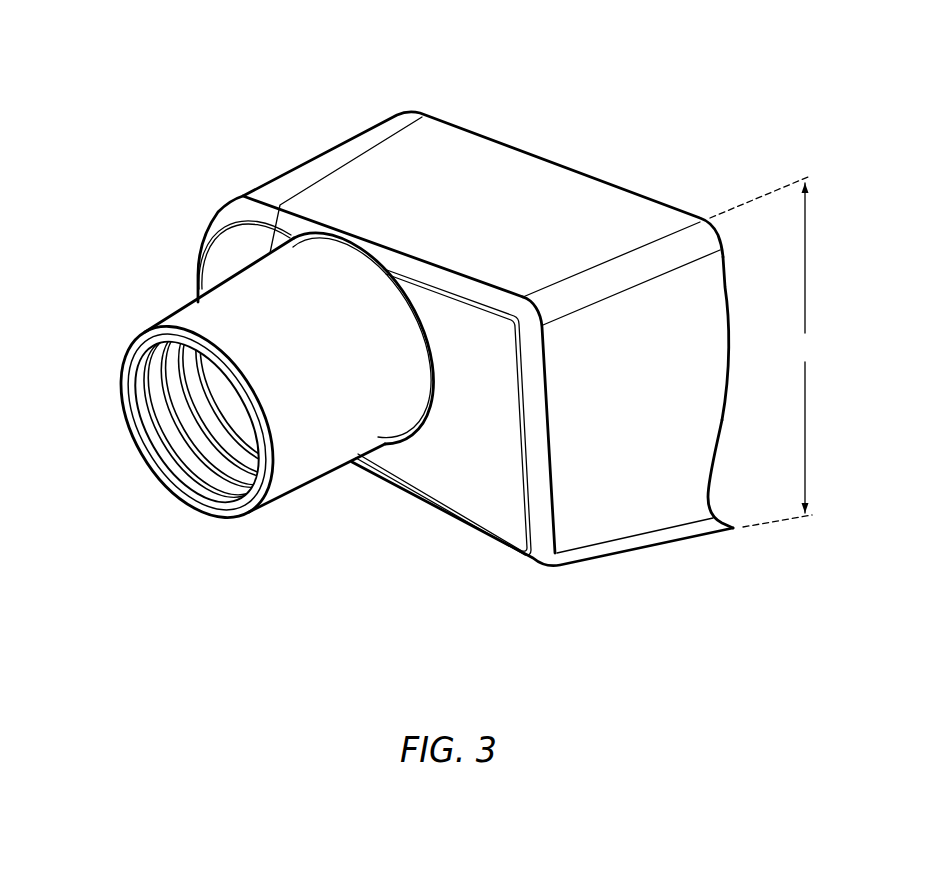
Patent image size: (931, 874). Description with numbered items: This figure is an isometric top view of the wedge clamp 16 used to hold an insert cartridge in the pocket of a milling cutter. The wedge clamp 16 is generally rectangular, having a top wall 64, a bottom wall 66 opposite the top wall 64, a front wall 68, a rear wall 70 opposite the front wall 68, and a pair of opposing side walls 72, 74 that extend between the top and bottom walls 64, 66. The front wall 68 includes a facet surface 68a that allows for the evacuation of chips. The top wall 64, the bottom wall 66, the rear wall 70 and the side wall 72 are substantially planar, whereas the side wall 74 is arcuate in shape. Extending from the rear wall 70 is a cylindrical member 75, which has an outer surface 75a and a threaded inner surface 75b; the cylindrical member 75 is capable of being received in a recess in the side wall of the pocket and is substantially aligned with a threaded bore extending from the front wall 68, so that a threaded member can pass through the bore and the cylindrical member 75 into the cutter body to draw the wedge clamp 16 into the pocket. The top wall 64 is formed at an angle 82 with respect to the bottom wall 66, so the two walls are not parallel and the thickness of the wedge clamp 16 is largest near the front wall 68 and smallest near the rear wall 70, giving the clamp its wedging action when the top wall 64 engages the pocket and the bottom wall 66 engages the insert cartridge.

The wedge clamp 16 is at (636, 94).
The top wall 64 is at (479, 166).
The bottom wall 66 is at (480, 542).
The front wall 68 is at (738, 325).
The facet surface 68a is at (716, 450).
The rear wall 70 is at (455, 450).
The side wall 72 is at (620, 476).
The side wall 74 is at (222, 197).
The cylindrical member 75 is at (195, 313).
The outer surface 75a is at (223, 305).
The threaded inner surface 75b is at (163, 428).
The angle 82 is at (763, 352).